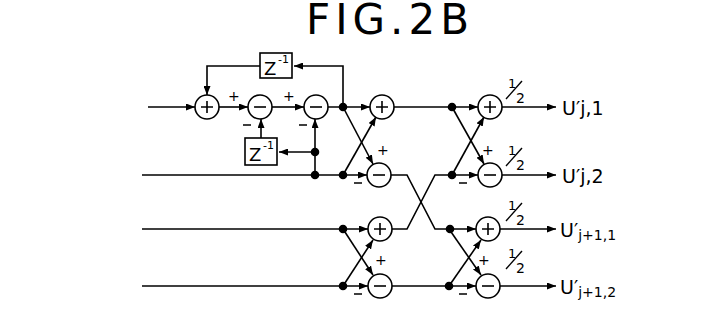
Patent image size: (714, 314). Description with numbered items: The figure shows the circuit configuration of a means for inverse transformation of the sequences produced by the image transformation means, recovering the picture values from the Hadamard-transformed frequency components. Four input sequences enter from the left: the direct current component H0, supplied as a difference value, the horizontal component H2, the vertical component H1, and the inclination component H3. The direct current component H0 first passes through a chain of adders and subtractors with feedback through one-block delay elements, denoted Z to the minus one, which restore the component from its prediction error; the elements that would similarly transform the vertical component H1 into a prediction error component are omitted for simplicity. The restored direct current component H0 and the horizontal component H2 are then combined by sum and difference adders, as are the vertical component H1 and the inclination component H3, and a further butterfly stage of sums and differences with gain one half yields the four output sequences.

The direct current component H0 is at (149, 101).
The vertical component H1 is at (236, 229).
The horizontal component H2 is at (238, 175).
The inclination component H3 is at (236, 286).